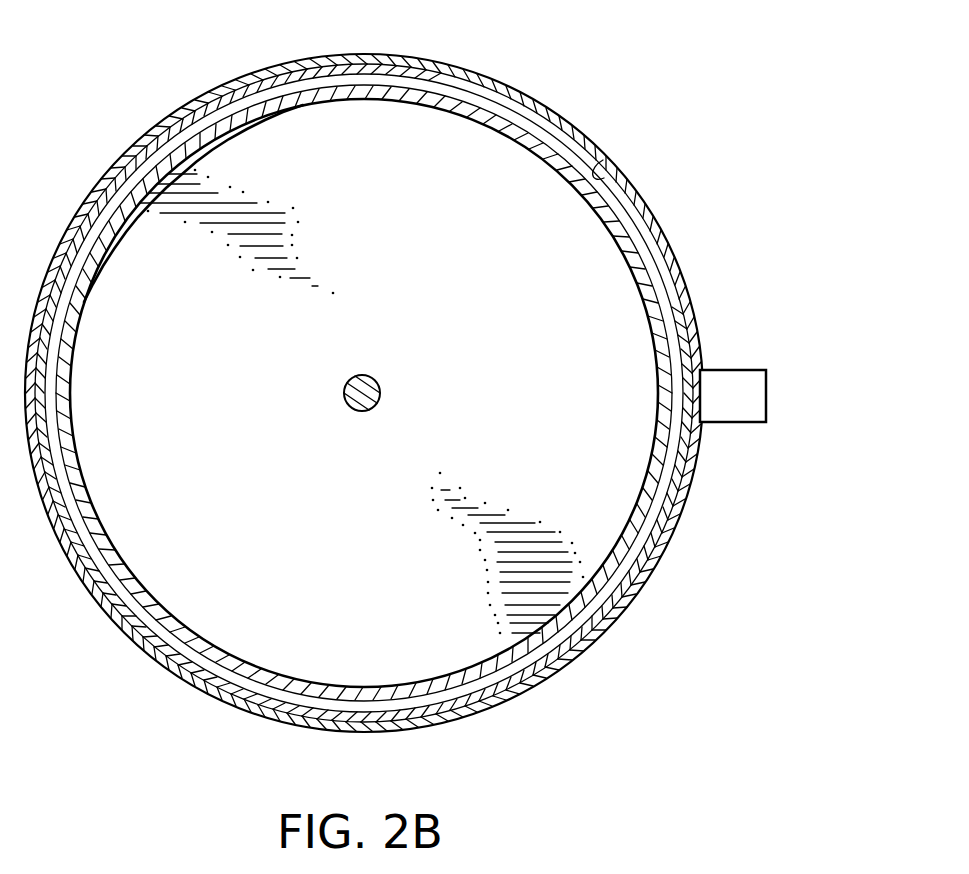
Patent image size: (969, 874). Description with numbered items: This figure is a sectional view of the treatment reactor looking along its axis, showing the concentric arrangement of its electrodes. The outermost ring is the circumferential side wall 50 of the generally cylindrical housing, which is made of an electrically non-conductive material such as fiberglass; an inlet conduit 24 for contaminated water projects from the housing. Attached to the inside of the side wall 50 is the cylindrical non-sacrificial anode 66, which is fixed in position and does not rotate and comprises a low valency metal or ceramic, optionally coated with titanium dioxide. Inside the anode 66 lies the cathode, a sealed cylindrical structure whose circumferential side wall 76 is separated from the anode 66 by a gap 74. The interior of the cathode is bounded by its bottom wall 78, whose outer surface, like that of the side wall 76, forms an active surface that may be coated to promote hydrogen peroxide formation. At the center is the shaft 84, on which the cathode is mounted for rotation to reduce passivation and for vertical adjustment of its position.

The inlet conduit 24 is at (733, 383).
The circumferential side wall 50 is at (547, 108).
The non-sacrificial anode 66 is at (607, 155).
The gap 74 is at (622, 260).
The circumferential side wall 76 is at (507, 137).
The bottom wall 78 is at (272, 492).
The shaft 84 is at (380, 380).